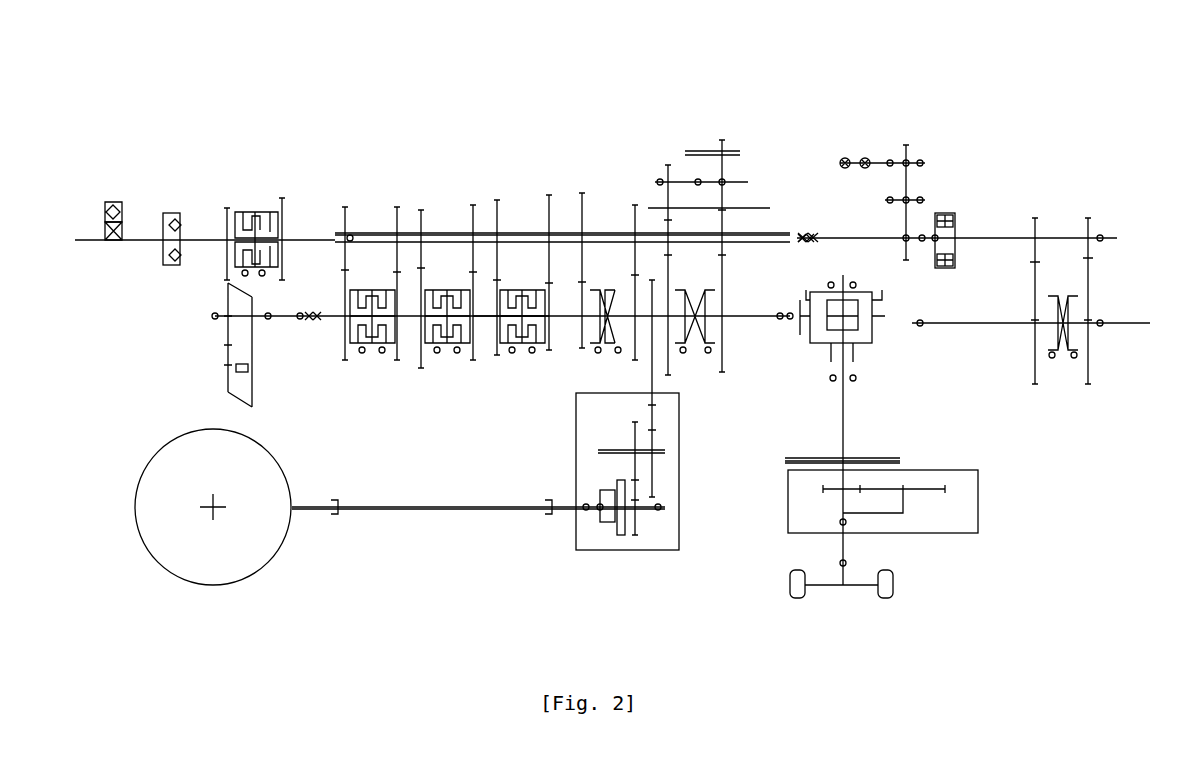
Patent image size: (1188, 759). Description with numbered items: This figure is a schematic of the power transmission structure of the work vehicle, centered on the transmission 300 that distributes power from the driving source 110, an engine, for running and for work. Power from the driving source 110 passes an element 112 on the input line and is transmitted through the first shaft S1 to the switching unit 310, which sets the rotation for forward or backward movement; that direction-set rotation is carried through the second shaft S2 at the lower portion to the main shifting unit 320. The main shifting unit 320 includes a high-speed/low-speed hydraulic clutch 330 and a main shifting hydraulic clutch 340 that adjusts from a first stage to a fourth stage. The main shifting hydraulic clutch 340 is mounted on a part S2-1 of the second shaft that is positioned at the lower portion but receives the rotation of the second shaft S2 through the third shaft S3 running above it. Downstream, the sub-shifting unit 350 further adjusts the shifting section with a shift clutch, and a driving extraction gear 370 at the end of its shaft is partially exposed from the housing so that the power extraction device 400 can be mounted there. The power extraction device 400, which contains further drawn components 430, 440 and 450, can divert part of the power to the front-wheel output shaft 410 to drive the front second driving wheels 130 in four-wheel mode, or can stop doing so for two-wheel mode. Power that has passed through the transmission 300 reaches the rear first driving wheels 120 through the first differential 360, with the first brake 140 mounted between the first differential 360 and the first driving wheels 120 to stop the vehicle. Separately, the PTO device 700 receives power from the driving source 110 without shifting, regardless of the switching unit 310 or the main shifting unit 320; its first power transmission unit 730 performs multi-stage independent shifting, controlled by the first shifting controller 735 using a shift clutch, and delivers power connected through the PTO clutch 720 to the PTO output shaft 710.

The transmission 300 is at (518, 50).
The main shifting unit 320 is at (400, 138).
The switching unit 310 is at (255, 210).
The high-speed/low-speed hydraulic clutch 330 is at (373, 345).
The main shifting hydraulic clutch 340 is at (455, 345).
The sub-shifting unit 350 is at (697, 358).
The first differential 360 is at (862, 345).
The driving extraction gear 370 is at (652, 420).
The power extraction device 400 is at (625, 560).
The front-wheel output shaft 410 is at (572, 510).
The motor clutch 430 is at (605, 492).
The motor gear 440 is at (620, 480).
The motor output gear 450 is at (640, 522).
The second driving wheels 130 is at (285, 540).
The first brake 140 is at (880, 462).
The first driving wheels 120 is at (895, 582).
The driving source 110 is at (120, 200).
The damper 112 is at (175, 213).
The PTO device 700 is at (988, 148).
The PTO output shaft 710 is at (1130, 325).
The PTO clutch 720 is at (957, 225).
The first power transmission unit 730 is at (1058, 238).
The first shifting controller 735 is at (1063, 352).
The first shaft S1 is at (225, 242).
The second shaft S2 is at (345, 330).
The part of the second shaft S2-1 is at (488, 345).
The third shaft S3 is at (516, 224).